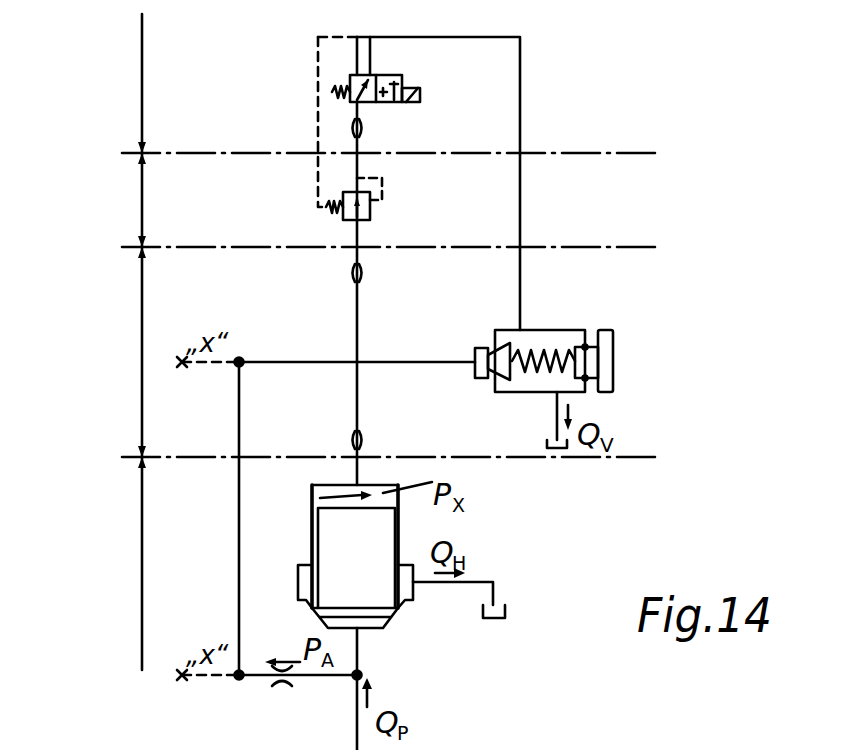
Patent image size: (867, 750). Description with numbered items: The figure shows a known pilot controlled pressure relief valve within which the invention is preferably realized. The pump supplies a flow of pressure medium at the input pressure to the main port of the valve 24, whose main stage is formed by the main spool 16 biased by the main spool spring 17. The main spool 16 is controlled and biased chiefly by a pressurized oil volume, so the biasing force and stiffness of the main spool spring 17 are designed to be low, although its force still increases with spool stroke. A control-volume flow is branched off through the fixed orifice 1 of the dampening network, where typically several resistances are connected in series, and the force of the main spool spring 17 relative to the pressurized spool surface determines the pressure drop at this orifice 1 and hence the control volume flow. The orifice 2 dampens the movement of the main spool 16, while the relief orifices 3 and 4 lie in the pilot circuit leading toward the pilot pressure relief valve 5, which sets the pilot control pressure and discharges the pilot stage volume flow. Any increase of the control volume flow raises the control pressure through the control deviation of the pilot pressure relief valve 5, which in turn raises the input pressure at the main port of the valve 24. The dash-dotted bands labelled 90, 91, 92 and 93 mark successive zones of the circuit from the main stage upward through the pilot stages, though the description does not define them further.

The orifice for control-volume flow 1 is at (283, 690).
The orifice for dampening the movement of the main spool 2 is at (368, 441).
The relief orifice 3 is at (370, 273).
The relief orifice 4 is at (370, 128).
The pilot pressure relief valve 5 is at (552, 330).
The main spool 16 is at (333, 530).
The main spool spring 17 is at (320, 497).
The valve 24 is at (370, 597).
The first stage 90 is at (142, 555).
The second stage 91 is at (142, 357).
The third stage 92 is at (142, 208).
The fourth stage 93 is at (142, 80).